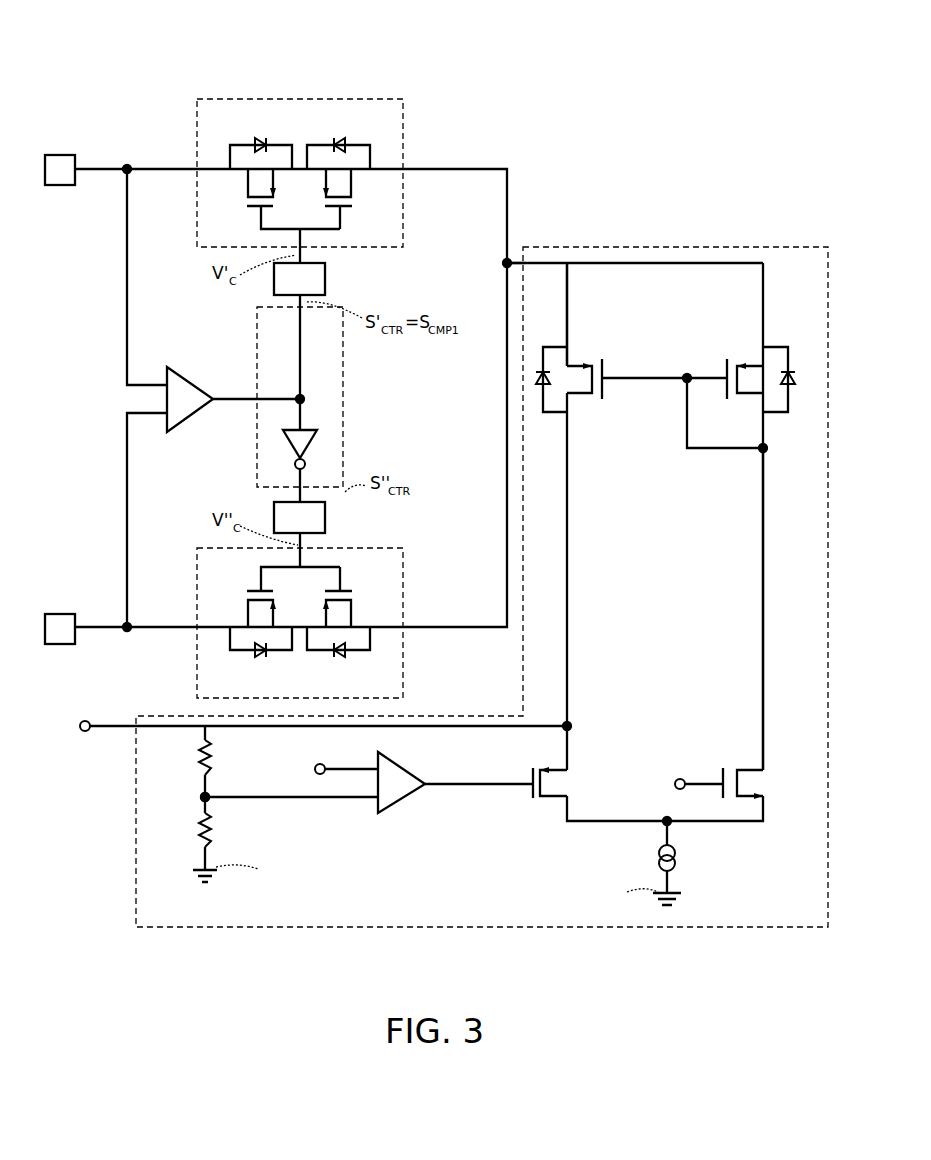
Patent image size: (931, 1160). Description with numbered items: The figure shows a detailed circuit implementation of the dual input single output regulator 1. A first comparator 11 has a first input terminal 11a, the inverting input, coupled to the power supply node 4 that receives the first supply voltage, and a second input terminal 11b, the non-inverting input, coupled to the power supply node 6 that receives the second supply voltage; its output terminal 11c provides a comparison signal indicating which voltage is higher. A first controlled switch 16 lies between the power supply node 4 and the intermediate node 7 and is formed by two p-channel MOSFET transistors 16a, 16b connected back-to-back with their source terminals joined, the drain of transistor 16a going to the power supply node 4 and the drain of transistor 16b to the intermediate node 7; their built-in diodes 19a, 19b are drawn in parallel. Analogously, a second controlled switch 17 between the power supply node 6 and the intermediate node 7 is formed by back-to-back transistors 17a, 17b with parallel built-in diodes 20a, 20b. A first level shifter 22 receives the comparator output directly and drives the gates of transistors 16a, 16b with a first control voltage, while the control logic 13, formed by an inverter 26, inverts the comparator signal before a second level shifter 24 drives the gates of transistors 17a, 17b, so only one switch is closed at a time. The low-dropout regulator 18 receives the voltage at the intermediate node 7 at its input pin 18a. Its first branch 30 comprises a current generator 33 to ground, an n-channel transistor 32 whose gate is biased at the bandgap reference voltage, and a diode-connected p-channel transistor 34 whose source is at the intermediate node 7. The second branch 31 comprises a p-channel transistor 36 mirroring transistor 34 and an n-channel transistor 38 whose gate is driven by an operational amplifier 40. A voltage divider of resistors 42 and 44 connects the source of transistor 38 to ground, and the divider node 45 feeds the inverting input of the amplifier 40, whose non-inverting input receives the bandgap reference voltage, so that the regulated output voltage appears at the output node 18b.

The DISO regulator 1 is at (145, 52).
The power supply node 4 is at (64, 181).
The power supply node 6 is at (64, 638).
The intermediate node 7 is at (503, 262).
The first comparator 11 is at (188, 384).
The first input terminal 11a is at (162, 372).
The second input terminal 11b is at (164, 422).
The output terminal 11c is at (216, 406).
The control logic 13 is at (343, 372).
The first controlled switch 16 is at (404, 128).
The transistor 16a is at (247, 198).
The transistor 16b is at (352, 198).
The second controlled switch 17 is at (404, 680).
The transistor 17a is at (247, 598).
The transistor 17b is at (352, 599).
The LDO regulator 18 is at (644, 246).
The input pin 18a is at (506, 263).
The output node 18b is at (82, 733).
The diode 19a is at (257, 138).
The diode 19b is at (335, 138).
The diode 20a is at (258, 660).
The diode 20b is at (336, 658).
The first level shifter 22 is at (323, 278).
The second level shifter 24 is at (326, 520).
The inverter 26 is at (306, 446).
The first branch 30 is at (766, 507).
The second branch 31 is at (570, 537).
The n-channel transistor 32 is at (735, 769).
The current generator 33 is at (676, 856).
The p-channel transistor 34 is at (732, 366).
The p-channel transistor 36 is at (599, 366).
The n-channel transistor 38 is at (537, 800).
The operational amplifier 40 is at (406, 795).
The resistor 42 is at (200, 752).
The resistor 44 is at (200, 826).
The node 45 is at (200, 796).